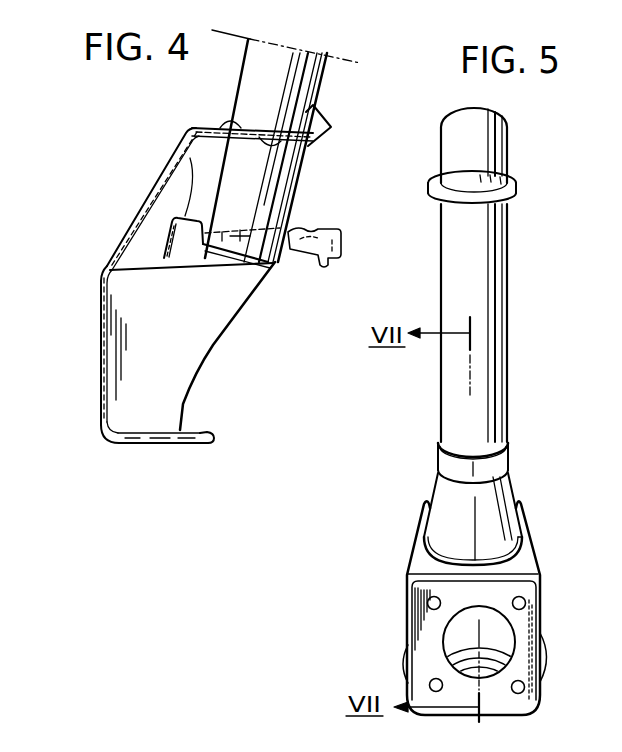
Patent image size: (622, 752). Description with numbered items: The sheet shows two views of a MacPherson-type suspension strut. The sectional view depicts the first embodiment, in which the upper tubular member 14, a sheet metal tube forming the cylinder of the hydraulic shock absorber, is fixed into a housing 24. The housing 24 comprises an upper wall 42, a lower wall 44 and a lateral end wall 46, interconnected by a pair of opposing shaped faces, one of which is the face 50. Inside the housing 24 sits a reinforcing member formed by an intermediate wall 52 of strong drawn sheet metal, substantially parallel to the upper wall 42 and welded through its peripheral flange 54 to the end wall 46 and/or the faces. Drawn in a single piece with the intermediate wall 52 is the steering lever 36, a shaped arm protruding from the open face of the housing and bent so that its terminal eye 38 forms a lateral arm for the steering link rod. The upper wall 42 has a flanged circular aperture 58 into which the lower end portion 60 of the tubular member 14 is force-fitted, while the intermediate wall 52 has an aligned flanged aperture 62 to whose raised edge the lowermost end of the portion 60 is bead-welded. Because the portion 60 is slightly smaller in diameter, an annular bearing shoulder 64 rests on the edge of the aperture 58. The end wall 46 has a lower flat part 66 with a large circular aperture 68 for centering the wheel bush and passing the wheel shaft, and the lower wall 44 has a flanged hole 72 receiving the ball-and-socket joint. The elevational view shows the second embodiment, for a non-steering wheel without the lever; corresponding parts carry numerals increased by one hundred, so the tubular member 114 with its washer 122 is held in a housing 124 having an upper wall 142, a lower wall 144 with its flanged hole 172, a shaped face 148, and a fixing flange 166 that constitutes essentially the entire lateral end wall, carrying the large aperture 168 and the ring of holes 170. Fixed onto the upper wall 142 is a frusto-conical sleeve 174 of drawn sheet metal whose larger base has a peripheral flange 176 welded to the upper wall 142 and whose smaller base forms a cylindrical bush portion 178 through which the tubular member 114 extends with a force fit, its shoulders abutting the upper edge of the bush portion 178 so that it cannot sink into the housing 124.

In FIG. 4, the upper tubular member 14 is at (237, 91).
In FIG. 4, the housing 24 is at (239, 323).
In FIG. 4, the steering lever 36 is at (327, 262).
In FIG. 4, the terminal eye 38 is at (299, 206).
In FIG. 4, the upper wall 42 is at (210, 126).
In FIG. 4, the lower wall 44 is at (209, 447).
In FIG. 4, the lateral end wall 46 is at (132, 223).
In FIG. 4, the shaped face 50 is at (180, 350).
In FIG. 4, the intermediate wall 52 is at (172, 176).
In FIG. 4, the peripheral flange 54 is at (163, 230).
In FIG. 4, the flanged circular aperture 58 is at (228, 126).
In FIG. 4, the lower end portion 60 is at (309, 153).
In FIG. 4, the flanged circular aperture 62 is at (203, 246).
In FIG. 4, the annular bearing shoulder 64 is at (318, 103).
In FIG. 4, the lower flat part 66 is at (99, 428).
In FIG. 4, the large circular aperture 68 is at (99, 298).
In FIG. 4, the flanged circular hole 72 is at (139, 448).
In FIG. 5, the tubular member 114 is at (483, 268).
In FIG. 5, the collar 122 is at (512, 188).
In FIG. 5, the housing 124 is at (541, 561).
In FIG. 5, the upper wall 142 is at (418, 570).
In FIG. 5, the tube end 144 is at (500, 654).
In FIG. 5, the member 148 is at (607, 319).
In FIG. 5, the fixing flange 166 is at (524, 622).
In FIG. 5, the opening 168 is at (452, 628).
In FIG. 5, the holes 170 is at (428, 603).
In FIG. 5, the boss 172 is at (540, 700).
In FIG. 5, the sleeve 174 is at (447, 503).
In FIG. 5, the peripheral flange 176 is at (523, 550).
In FIG. 5, the cylindrical bush portion 178 is at (511, 452).